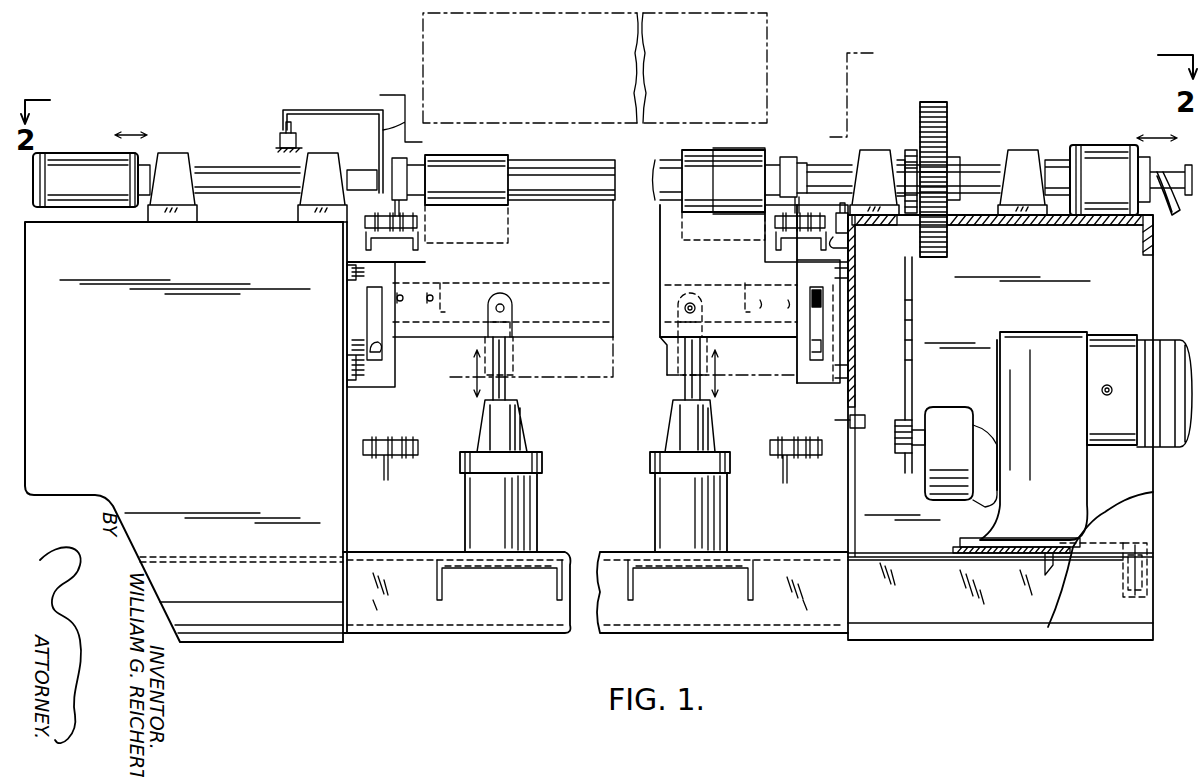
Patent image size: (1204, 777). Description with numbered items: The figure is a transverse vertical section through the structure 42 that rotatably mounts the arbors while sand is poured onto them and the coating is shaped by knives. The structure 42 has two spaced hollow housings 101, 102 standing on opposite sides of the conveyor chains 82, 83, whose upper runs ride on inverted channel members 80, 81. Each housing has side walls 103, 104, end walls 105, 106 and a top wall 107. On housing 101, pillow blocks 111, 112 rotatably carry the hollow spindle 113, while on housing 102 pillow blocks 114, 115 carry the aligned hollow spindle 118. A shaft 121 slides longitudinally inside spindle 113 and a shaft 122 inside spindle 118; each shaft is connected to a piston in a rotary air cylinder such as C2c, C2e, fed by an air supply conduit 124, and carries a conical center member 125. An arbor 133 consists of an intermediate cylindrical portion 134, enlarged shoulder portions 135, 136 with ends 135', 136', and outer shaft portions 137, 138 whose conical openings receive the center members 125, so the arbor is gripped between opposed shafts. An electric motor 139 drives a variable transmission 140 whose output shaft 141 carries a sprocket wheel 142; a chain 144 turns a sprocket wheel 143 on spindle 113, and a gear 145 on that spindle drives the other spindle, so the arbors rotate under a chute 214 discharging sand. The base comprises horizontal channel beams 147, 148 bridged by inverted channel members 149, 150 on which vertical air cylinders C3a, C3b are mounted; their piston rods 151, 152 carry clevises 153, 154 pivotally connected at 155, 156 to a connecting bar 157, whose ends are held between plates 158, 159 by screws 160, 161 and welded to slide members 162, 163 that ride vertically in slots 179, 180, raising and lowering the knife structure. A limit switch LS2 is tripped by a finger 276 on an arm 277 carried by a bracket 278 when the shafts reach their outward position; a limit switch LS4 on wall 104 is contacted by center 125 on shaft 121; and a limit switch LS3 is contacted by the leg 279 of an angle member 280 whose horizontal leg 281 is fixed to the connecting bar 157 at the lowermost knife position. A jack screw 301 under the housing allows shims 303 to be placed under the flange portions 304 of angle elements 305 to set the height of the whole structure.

The structure for rotatably mounting the arbors 42 is at (1163, 283).
The inverted channel member 80 is at (391, 236).
The inverted channel member 81 is at (806, 233).
The conveyor chain 82 is at (357, 239).
The conveyor chain 83 is at (838, 212).
The hollow housing 101 is at (1165, 258).
The hollow housing 102 is at (65, 497).
The side wall 103 is at (1155, 305).
The side wall 104 is at (855, 330).
The end wall 105 is at (1147, 538).
The end wall 106 is at (1142, 482).
The top wall 107 is at (1050, 228).
The pillow block 111 is at (874, 149).
The pillow block 112 is at (1057, 158).
The second spindle 113 is at (1000, 162).
The pillow block 114 is at (176, 151).
The pillow block 115 is at (320, 151).
The spindle 118 is at (270, 194).
The shaft 121 is at (837, 163).
The shaft 122 is at (360, 169).
The air supply conduit 124 is at (1165, 220).
The conical center member 125 is at (803, 160).
The arbor 133 is at (567, 150).
The intermediate cylindrical portion 134 is at (537, 162).
The enlarged cylindrical shoulder portion 135 is at (466, 157).
The roller end 135' is at (452, 161).
The enlarged cylindrical shoulder portion 136 is at (709, 163).
The roller end 136' is at (741, 166).
The cylindrical shaft portion 137 is at (412, 157).
The cylindrical shaft portion 138 is at (788, 156).
The electric motor 139 is at (1148, 452).
The variable transmission 140 is at (1030, 331).
The output shaft 141 is at (894, 430).
The sprocket wheel 142 is at (915, 412).
The sprocket wheel 143 is at (910, 150).
The chain 144 is at (918, 322).
The gear 145 is at (948, 116).
The horizontal channel beam 147 is at (803, 600).
The horizontal channel beam 148 is at (873, 598).
The inverted channel member 149 is at (445, 585).
The inverted channel member 150 is at (643, 585).
The piston rod 151 is at (508, 385).
The piston rod 152 is at (684, 375).
The clevis 153 is at (513, 303).
The clevis 154 is at (698, 300).
The pivotal connection 155 is at (500, 303).
The pivotal connection 156 is at (682, 253).
The connecting bar 157 is at (590, 278).
The plate 158 is at (445, 296).
The plate 159 is at (745, 283).
The screw 160 is at (430, 294).
The screw 161 is at (765, 298).
The slide member 162 is at (366, 298).
The slide member 163 is at (826, 280).
The vertical slot 179 is at (382, 352).
The vertical slot 180 is at (810, 350).
The chute 214 is at (770, 90).
The engaging finger 276 is at (283, 130).
The arm 277 is at (312, 109).
The bracket 278 is at (413, 110).
The downwardly extending leg portion 279 is at (848, 421).
The angle member 280 is at (823, 378).
The horizontal leg portion 281 is at (780, 336).
The jack screw 301 is at (1150, 560).
The shim 303 is at (945, 638).
The horizontal flange portion 304 is at (1107, 637).
The angle element 305 is at (1080, 600).
The rotary air cylinder C2c is at (80, 152).
The cylinder C2e is at (1090, 148).
The air cylinder C3a is at (468, 510).
The air cylinder C3b is at (730, 512).
The limit switch LS2 is at (278, 141).
The limit switch LS3 is at (857, 430).
The limit switch LS4 is at (849, 248).